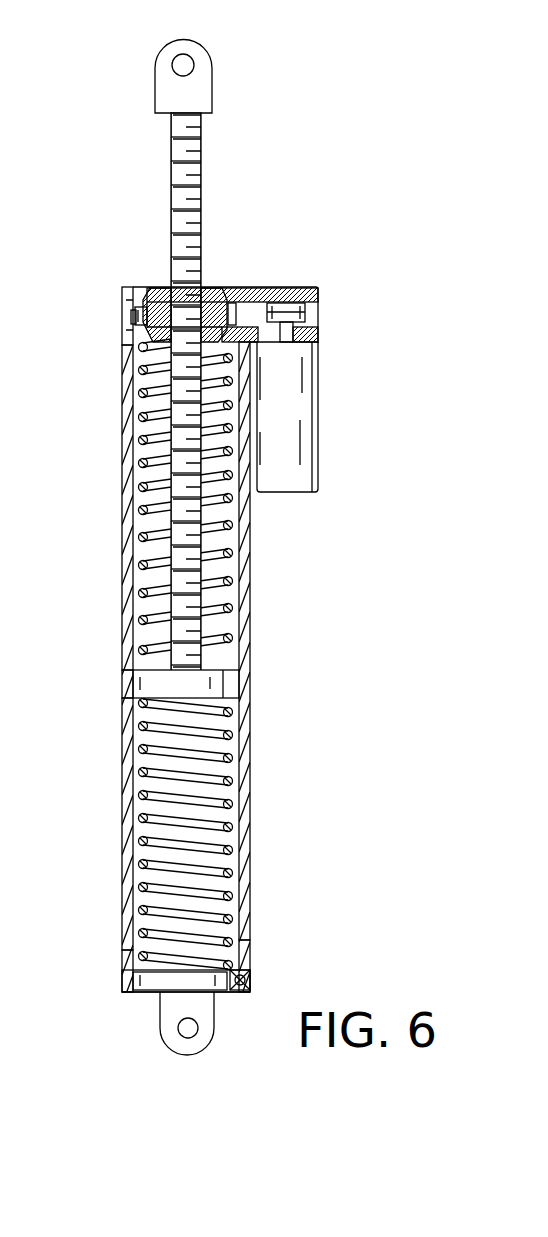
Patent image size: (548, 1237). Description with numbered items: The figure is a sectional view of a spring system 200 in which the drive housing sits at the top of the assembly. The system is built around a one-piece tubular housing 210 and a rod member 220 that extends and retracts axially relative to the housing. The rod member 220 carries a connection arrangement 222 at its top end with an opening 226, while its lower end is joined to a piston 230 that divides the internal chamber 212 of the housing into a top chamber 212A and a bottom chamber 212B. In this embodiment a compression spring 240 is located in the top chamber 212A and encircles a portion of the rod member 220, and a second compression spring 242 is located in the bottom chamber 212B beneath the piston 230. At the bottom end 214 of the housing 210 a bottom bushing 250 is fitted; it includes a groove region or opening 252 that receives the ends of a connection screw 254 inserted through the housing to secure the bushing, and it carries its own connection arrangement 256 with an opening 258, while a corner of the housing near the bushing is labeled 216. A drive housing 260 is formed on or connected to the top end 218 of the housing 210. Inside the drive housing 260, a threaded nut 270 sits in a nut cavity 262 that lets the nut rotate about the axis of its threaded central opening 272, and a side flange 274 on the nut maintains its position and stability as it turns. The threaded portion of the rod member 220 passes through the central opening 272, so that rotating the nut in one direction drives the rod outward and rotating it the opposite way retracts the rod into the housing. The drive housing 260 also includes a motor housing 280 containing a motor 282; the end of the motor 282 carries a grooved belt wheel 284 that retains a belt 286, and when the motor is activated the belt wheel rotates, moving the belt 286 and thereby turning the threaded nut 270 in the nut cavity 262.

The spring system 200 is at (250, 186).
The tubular housing 210 is at (253, 735).
The internal chamber 212 is at (148, 812).
The top chamber 212A is at (124, 456).
The bottom chamber 212B is at (138, 877).
The bottom end of housing 214 is at (122, 955).
The lower housing corner 216 is at (257, 960).
The top end of housing 218 is at (122, 337).
The rod member 220 is at (170, 184).
The connection arrangement 222 is at (200, 96).
The upper mounting aperture 226 is at (185, 62).
The piston 230 is at (240, 685).
The compression spring 240 is at (128, 514).
The second compression spring 242 is at (195, 815).
The bottom bushing 250 is at (152, 988).
The groove region or opening 252 is at (237, 992).
The connection screw 254 is at (256, 978).
The connection arrangement 256 is at (162, 1024).
The opening 258 is at (190, 1034).
The drive housing 260 is at (284, 287).
The nut cavity 262 is at (133, 326).
The threaded nut 270 is at (158, 297).
The central opening 272 is at (162, 297).
The side flange 274 is at (133, 318).
The motor housing 280 is at (319, 383).
The motor 282 is at (292, 431).
The grooved belt wheel 284 is at (305, 309).
The belt 286 is at (236, 312).